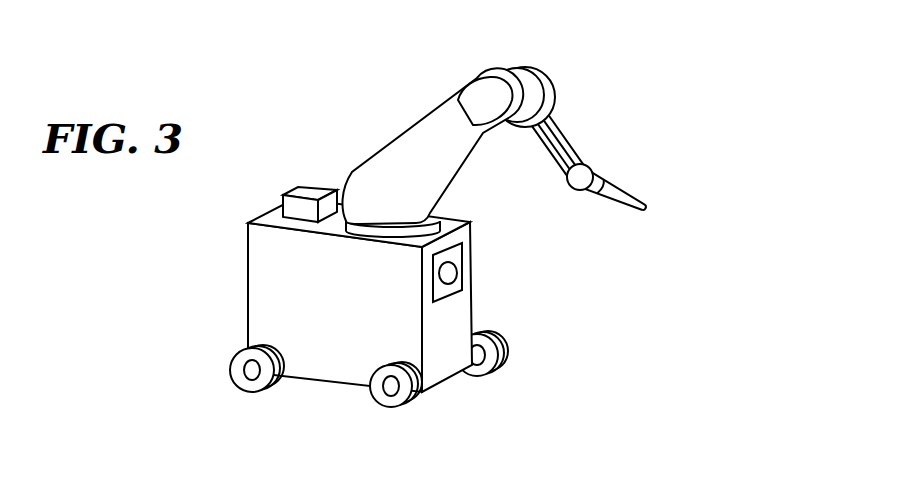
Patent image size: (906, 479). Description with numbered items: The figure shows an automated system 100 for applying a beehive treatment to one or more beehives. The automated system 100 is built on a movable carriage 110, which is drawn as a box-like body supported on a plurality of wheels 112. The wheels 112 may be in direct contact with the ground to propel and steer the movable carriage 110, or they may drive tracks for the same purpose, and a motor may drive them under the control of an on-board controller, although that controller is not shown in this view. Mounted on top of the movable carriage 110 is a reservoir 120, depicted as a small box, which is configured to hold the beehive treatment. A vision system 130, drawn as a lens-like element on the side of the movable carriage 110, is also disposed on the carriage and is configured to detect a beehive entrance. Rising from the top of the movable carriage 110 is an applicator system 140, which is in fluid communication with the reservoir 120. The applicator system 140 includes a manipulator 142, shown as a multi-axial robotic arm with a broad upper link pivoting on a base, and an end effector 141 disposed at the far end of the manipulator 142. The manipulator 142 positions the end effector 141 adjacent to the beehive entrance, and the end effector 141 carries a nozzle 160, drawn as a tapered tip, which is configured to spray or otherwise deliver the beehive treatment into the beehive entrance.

The automated system 100 is at (674, 130).
The movable carriage 110 is at (248, 252).
The wheels 112 is at (237, 365).
The reservoir 120 is at (312, 190).
The vision system 130 is at (452, 273).
The applicator system 140 is at (540, 62).
The end effector 141 is at (594, 186).
The manipulator 142 is at (377, 182).
The nozzle 160 is at (627, 193).